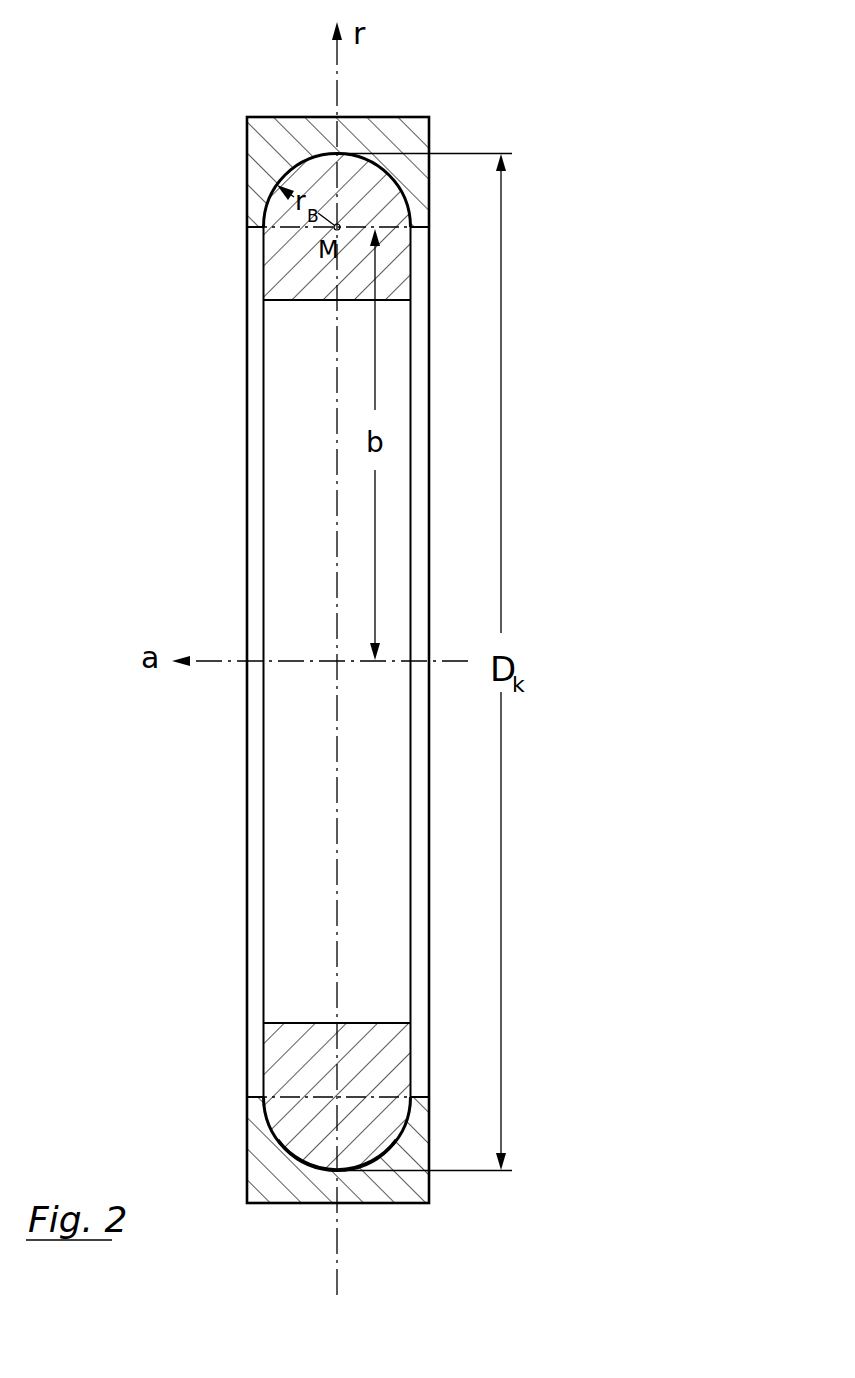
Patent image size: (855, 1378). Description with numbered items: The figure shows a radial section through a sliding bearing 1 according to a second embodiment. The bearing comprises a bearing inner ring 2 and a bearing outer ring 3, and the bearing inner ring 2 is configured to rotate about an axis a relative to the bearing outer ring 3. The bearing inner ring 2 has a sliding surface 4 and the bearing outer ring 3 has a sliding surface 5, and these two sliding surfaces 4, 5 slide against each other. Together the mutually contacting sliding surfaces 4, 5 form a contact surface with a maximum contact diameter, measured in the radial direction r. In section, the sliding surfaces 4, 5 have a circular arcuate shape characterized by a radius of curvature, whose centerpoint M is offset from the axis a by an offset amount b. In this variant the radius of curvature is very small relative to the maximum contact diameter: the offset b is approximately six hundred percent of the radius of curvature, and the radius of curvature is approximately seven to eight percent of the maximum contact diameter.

The sliding bearing 1 is at (113, 203).
The bearing inner ring 2 is at (285, 1064).
The bearing outer ring 3 is at (260, 1166).
The sliding surface 4 is at (267, 1133).
The sliding surface 5 is at (378, 1148).